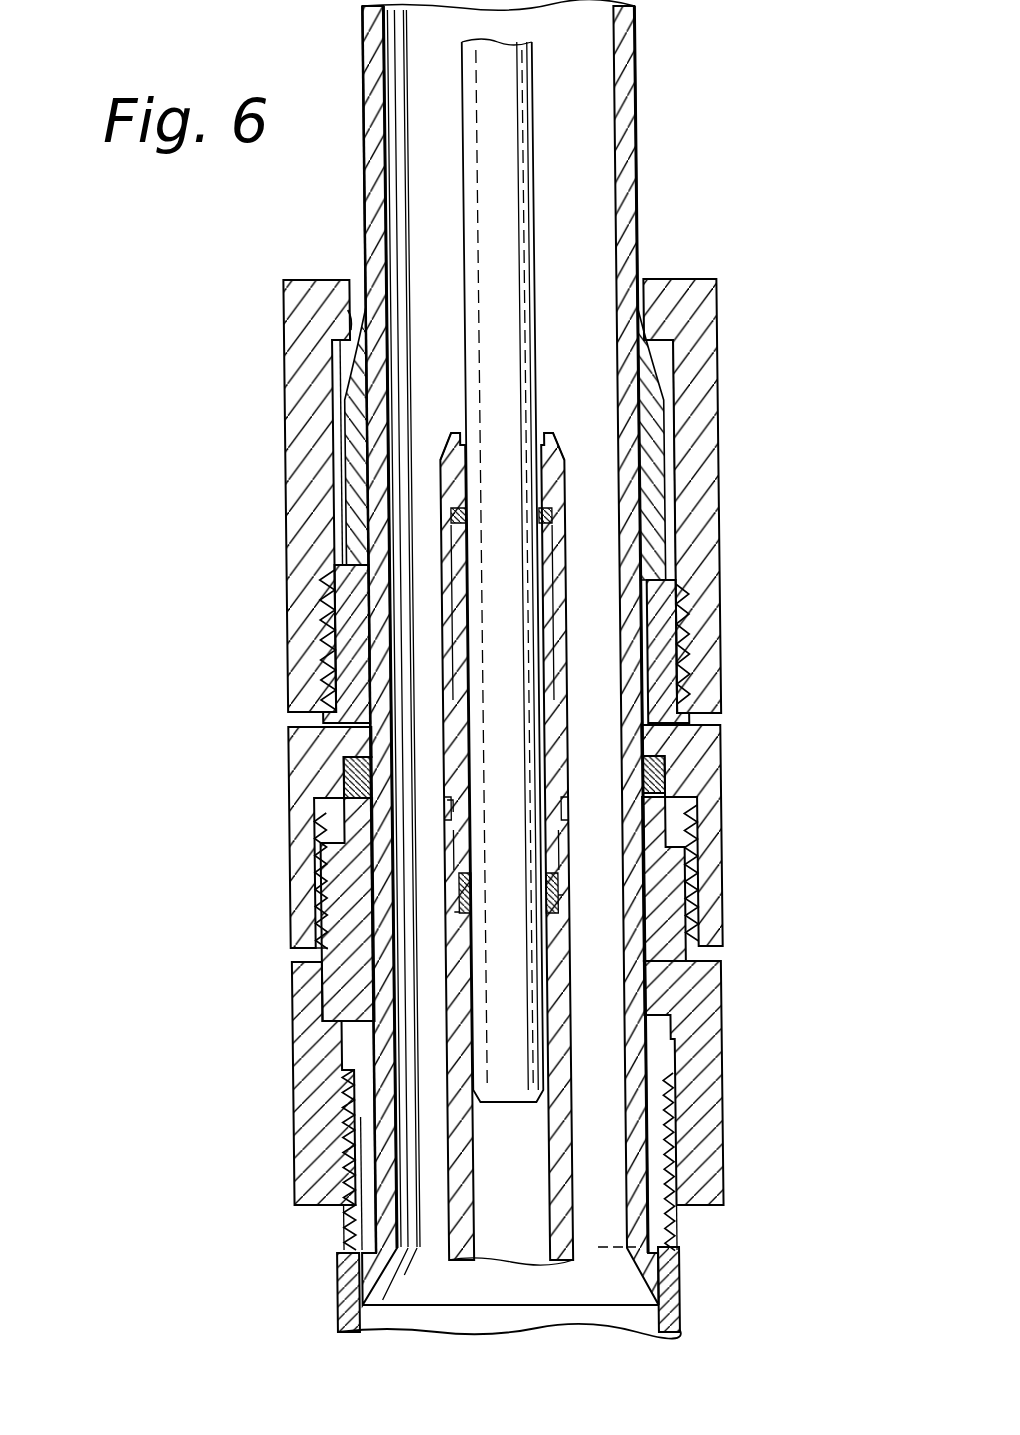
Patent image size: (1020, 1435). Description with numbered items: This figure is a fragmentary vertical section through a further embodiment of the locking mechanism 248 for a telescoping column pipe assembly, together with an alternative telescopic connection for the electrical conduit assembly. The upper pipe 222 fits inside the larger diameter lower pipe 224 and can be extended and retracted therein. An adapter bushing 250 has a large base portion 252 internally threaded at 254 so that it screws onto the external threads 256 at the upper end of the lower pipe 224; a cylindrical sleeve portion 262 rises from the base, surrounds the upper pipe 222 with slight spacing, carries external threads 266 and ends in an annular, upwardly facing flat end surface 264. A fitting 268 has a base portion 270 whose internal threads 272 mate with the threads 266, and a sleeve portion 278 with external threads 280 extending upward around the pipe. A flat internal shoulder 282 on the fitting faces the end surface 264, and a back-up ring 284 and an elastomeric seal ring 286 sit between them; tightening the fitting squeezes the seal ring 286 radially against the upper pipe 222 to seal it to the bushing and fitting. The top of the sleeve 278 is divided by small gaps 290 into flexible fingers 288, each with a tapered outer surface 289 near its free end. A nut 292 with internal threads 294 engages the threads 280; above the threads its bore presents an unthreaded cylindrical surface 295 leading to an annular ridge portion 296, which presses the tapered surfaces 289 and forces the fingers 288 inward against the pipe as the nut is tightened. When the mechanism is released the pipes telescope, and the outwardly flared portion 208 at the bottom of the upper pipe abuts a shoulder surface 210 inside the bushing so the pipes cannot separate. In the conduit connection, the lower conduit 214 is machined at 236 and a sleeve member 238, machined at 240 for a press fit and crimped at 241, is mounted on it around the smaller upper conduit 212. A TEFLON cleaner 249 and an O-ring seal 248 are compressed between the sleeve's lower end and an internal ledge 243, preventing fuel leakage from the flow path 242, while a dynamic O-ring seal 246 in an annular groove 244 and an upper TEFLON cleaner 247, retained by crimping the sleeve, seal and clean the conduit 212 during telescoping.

The flared portion 208 is at (377, 1270).
The shoulder surface 210 is at (700, 1035).
The upper conduit 212 is at (537, 173).
The lower conduit 214 is at (565, 1245).
The upper pipe 222 is at (640, 172).
The lower pipe 224 is at (673, 1293).
The machined portion 236 is at (556, 855).
The sleeve member 238 is at (558, 680).
The machined lower portion 240 is at (565, 825).
The crimp 241 is at (448, 812).
The flow path 242 is at (575, 1138).
The internal ledge 243 is at (455, 913).
The annular groove 244 is at (553, 533).
The dynamic O-ring seal 246 is at (548, 515).
The upper annular TEFLON cleaner 247 is at (560, 445).
The locking mechanism 248 is at (556, 888).
The TEFLON cleaner 249 is at (558, 900).
The adapter bushing 250 is at (300, 1042).
The base portion 252 is at (300, 1133).
The internal threads 254 is at (348, 1190).
The external threads 256 is at (678, 1218).
The sleeve portion 262 is at (345, 905).
The flat end surface 264 is at (670, 783).
The external threads 266 is at (318, 875).
The fitting 268 is at (300, 740).
The base portion 270 is at (308, 832).
The internal threads 272 is at (698, 903).
The sleeve portion 278 is at (325, 652).
The external threads 280 is at (322, 596).
The internal shoulder 282 is at (714, 738).
The back-up ring 284 is at (664, 762).
The seal ring 286 is at (343, 775).
The fingers 288 is at (652, 472).
The tapered outer surface 289 is at (662, 352).
The gaps 290 is at (355, 450).
The nut 292 is at (300, 302).
The internal threads 294 is at (678, 652).
The cylindrical internal surface 295 is at (670, 430).
The annular ridge portion 296 is at (345, 327).